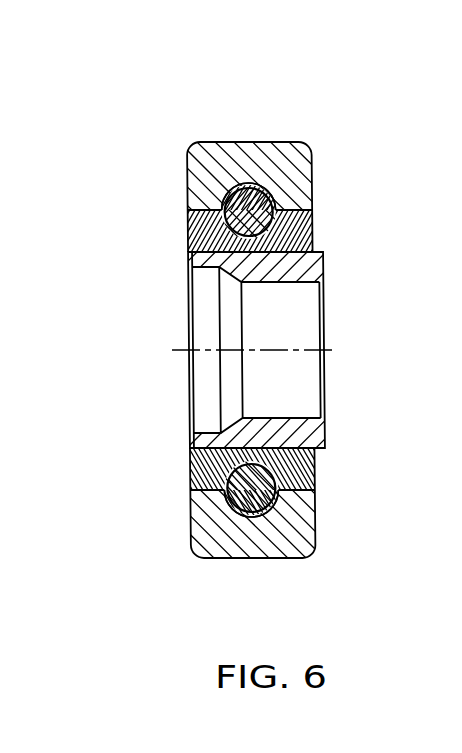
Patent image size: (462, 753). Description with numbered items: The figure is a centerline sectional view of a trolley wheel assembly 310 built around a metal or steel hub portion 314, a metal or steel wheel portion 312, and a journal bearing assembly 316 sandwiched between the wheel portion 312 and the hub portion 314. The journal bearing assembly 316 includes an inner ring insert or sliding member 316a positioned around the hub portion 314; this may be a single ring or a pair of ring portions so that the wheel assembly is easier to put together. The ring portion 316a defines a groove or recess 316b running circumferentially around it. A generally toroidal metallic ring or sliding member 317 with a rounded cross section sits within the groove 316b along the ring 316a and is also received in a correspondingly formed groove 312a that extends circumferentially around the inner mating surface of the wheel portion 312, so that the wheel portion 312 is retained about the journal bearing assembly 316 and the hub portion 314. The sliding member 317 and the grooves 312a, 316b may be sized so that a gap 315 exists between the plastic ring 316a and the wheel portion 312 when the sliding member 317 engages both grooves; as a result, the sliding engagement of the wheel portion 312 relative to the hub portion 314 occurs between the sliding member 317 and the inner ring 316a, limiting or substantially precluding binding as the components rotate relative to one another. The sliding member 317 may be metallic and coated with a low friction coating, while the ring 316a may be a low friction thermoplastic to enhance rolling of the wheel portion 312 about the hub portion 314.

The trolley wheel assembly 310 is at (275, 80).
The wheel portion 312 is at (300, 134).
The groove of wheel portion 312a is at (247, 188).
The hub portion 314 is at (331, 292).
The gap 315 is at (187, 211).
The journal bearing assembly 316 is at (156, 222).
The inner ring insert 316a is at (192, 238).
The groove of ring portion 316b is at (250, 240).
The sliding member 317 is at (262, 209).